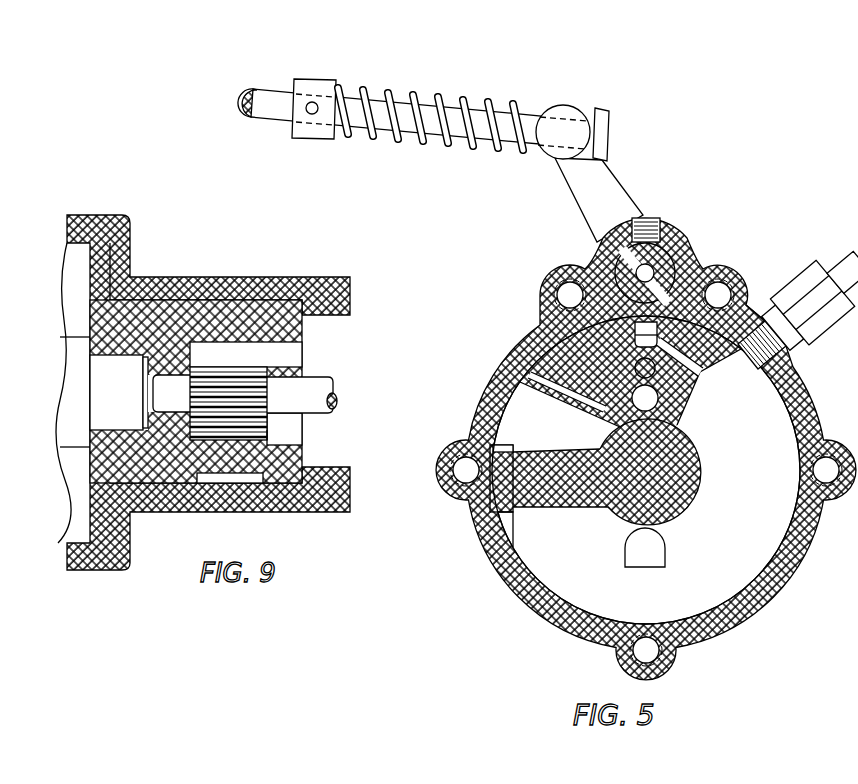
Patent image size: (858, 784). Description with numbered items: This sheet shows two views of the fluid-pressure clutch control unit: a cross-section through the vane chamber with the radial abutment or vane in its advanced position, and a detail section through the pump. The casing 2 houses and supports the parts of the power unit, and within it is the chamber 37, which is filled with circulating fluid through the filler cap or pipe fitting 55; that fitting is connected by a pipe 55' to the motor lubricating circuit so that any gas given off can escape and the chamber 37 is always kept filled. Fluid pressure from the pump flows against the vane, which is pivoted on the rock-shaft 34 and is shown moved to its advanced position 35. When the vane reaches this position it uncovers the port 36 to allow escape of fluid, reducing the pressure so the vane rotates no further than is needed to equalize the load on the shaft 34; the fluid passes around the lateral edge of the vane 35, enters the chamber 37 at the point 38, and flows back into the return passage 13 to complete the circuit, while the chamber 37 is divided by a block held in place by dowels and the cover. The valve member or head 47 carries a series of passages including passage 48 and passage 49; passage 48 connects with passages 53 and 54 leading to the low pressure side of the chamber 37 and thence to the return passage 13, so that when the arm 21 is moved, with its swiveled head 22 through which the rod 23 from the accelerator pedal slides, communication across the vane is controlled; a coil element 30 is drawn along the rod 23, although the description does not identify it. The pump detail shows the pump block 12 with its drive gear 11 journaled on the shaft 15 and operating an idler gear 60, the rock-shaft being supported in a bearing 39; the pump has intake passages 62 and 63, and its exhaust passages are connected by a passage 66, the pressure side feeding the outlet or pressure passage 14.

In FIG. 5, the casing 2 is at (772, 576).
In FIG. 9, the casing 2 is at (270, 283).
In FIG. 9, the drive gear 11 is at (242, 392).
In FIG. 9, the pump block 12 is at (208, 318).
In FIG. 5, the inlet passage 13 is at (645, 547).
In FIG. 5, the outlet or pressure passage 14 is at (645, 398).
In FIG. 9, the shaft 15 is at (310, 392).
In FIG. 5, the arm 21 is at (607, 200).
In FIG. 5, the head 22 is at (567, 110).
In FIG. 5, the rod 23 is at (270, 95).
In FIG. 5, the spring 30 is at (442, 93).
In FIG. 5, the rock-shaft 34 is at (685, 460).
In FIG. 9, the rock-shaft 34 is at (77, 403).
In FIG. 5, the vane (advanced position) 35 is at (540, 508).
In FIG. 5, the port 36 is at (503, 452).
In FIG. 5, the chamber 37 is at (646, 470).
In FIG. 5, the point 38 is at (507, 523).
In FIG. 9, the bearing 39 is at (119, 392).
In FIG. 5, the valve member or head 47 is at (650, 270).
In FIG. 5, the passage 48 is at (630, 258).
In FIG. 5, the passage 49 is at (665, 258).
In FIG. 5, the passage 53 is at (753, 290).
In FIG. 5, the passage 54 is at (697, 373).
In FIG. 5, the filler cap or pipe fitting 55 is at (796, 349).
In FIG. 5, the pipe 55' is at (814, 273).
In FIG. 9, the idler gear 60 is at (257, 430).
In FIG. 9, the intake passage 62 is at (288, 355).
In FIG. 9, the intake passage 63 is at (288, 430).
In FIG. 9, the passage 66 is at (213, 477).